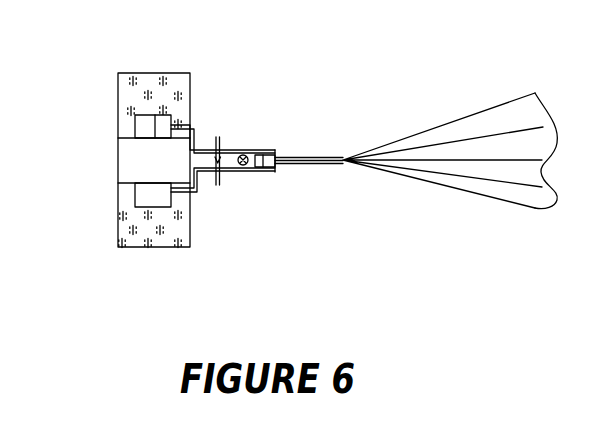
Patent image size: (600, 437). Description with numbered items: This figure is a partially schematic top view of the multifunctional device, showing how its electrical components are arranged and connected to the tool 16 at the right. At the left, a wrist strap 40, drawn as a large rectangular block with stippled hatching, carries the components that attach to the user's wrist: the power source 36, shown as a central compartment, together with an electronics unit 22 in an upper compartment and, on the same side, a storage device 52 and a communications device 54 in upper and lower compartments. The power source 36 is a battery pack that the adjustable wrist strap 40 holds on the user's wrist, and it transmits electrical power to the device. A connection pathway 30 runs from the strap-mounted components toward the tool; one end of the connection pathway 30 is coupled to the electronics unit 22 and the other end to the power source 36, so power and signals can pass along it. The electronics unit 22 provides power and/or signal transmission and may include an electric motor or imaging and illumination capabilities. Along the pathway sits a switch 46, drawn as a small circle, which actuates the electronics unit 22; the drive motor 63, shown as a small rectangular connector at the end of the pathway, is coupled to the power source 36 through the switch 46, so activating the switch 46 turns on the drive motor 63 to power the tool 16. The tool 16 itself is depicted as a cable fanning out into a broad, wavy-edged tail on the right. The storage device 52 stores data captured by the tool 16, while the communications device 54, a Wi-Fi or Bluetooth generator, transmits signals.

The wrist strap 40 is at (168, 83).
The electronics unit 22 is at (163, 124).
The storage device 52 is at (148, 127).
The power source 36 is at (148, 168).
The communications device 54 is at (143, 197).
The drive motor 63 is at (268, 172).
The connection pathway 30 is at (240, 172).
The switch 46 is at (246, 155).
The tool 16 is at (317, 165).